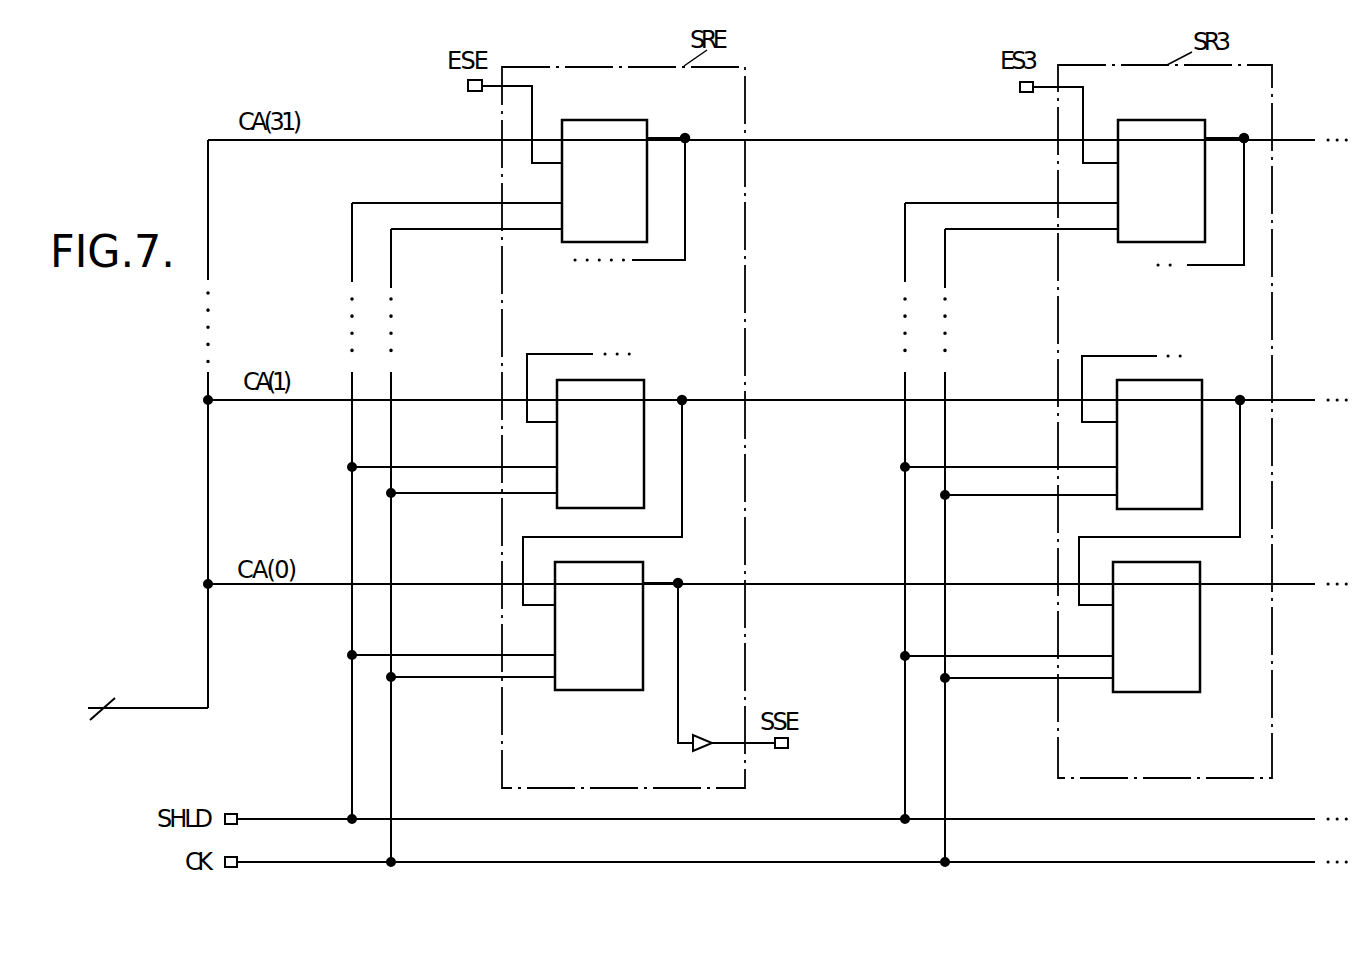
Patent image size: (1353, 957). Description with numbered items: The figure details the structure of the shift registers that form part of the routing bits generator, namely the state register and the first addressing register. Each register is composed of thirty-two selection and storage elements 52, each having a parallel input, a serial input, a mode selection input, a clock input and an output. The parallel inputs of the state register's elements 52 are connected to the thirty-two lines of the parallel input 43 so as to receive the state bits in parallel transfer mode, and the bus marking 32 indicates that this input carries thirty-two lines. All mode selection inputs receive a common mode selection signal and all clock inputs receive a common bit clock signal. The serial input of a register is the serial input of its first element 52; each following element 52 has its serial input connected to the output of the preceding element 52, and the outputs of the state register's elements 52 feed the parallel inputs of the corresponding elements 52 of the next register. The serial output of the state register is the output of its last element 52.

The column address bus 32 is at (719, 430).
The parallel input 43 is at (167, 708).
The selection and storage element 52 is at (647, 193).